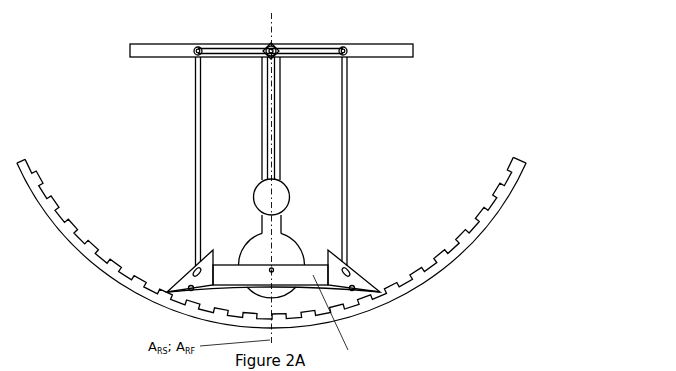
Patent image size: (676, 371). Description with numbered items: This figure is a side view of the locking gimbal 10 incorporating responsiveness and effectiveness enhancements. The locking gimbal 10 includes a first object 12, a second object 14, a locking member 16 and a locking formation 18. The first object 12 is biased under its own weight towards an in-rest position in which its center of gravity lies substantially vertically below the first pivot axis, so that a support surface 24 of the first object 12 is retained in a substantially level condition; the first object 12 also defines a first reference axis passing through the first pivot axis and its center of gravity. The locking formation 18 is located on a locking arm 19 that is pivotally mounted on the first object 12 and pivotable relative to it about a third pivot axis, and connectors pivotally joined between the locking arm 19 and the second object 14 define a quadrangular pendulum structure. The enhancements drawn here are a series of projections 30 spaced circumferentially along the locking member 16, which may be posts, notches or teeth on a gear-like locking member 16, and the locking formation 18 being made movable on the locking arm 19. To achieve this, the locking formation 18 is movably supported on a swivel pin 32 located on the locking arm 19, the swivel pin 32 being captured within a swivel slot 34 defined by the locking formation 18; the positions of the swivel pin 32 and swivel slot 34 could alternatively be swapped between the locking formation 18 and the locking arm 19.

The locking gimbal 10 is at (592, 160).
The first object 12 is at (277, 125).
The second object 14 is at (268, 141).
The locking member 16 is at (271, 242).
The locking formation 18 is at (285, 285).
The locking arm 19 is at (337, 320).
The support surface 24 is at (404, 44).
The projections 30 is at (488, 195).
The swivel pin 32 is at (348, 267).
The swivel slot 34 is at (333, 266).